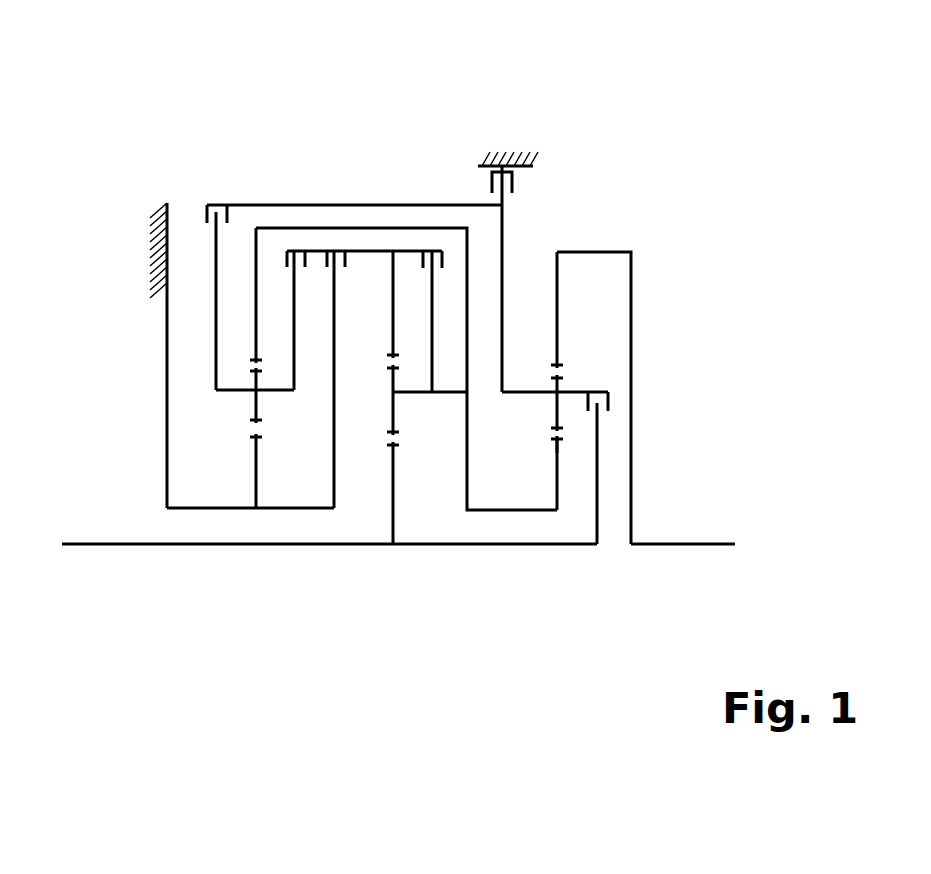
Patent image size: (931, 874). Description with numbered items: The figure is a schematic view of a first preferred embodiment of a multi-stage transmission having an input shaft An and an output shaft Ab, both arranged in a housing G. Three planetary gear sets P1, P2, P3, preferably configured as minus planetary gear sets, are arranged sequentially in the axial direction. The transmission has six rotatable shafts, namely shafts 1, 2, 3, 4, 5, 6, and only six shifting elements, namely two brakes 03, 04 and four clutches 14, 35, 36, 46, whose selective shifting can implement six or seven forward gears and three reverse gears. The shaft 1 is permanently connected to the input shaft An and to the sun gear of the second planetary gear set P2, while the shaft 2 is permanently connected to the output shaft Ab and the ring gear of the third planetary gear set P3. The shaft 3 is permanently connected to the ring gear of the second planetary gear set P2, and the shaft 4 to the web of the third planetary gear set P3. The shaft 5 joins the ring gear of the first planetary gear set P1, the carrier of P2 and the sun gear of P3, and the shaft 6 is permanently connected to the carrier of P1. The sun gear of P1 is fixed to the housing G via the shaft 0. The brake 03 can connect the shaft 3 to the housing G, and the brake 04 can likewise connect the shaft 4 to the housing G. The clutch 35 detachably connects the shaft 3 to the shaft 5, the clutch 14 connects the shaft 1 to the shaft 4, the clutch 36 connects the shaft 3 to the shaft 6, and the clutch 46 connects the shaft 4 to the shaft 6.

The housing G is at (156, 243).
The clutch 46 is at (216, 212).
The clutch 36 is at (293, 252).
The brake 03 is at (335, 252).
The clutch 35 is at (432, 260).
The brake 04 is at (492, 183).
The clutch 14 is at (600, 392).
The shaft 0 is at (254, 447).
The shaft 1 is at (389, 468).
The shaft 2 is at (557, 342).
The shaft 3 is at (393, 325).
The shaft 4 is at (557, 395).
The shaft 5 is at (254, 332).
The shaft 6 is at (253, 393).
The first planetary gear set P1 is at (251, 114).
The second planetary gear set P2 is at (388, 114).
The third planetary gear set P3 is at (554, 117).
The input shaft An is at (321, 521).
The output shaft Ab is at (688, 529).